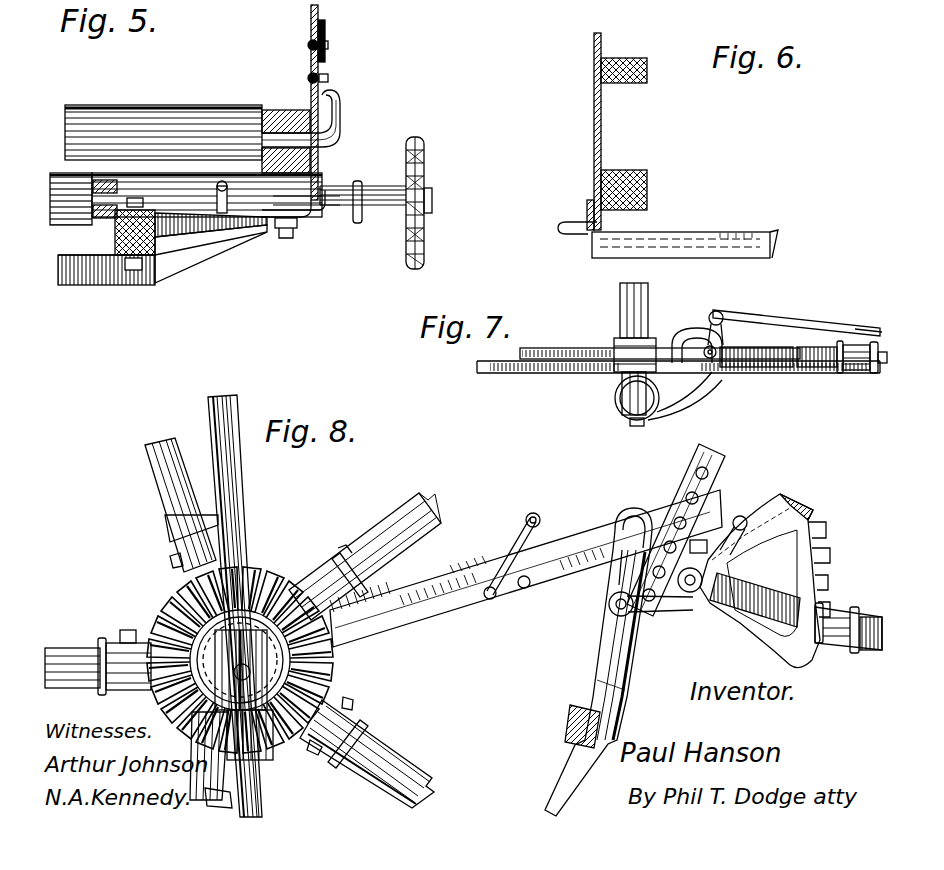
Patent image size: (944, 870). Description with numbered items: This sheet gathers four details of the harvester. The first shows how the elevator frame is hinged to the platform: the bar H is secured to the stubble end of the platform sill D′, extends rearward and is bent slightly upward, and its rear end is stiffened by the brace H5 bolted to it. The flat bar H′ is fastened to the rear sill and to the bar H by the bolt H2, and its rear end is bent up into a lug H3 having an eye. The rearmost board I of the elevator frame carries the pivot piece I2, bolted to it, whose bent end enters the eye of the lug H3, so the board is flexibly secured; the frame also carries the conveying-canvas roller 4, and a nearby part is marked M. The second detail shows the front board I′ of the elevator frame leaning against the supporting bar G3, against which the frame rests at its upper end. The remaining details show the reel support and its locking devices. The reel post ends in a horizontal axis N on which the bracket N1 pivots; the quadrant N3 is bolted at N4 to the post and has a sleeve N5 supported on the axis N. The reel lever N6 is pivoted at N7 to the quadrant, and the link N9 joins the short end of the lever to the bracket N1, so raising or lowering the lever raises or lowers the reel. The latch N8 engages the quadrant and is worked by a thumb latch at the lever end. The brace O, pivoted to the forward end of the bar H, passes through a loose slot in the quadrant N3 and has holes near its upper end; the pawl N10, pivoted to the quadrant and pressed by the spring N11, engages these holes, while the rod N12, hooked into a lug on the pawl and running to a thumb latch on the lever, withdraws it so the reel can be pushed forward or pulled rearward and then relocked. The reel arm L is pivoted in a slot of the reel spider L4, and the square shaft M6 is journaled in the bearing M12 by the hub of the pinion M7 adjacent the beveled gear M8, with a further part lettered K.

In FIG. 5, the roller 4 is at (163, 132).
In FIG. 5, the rearmost board of the elevator frame I is at (311, 33).
In FIG. 5, the pivot piece I2 is at (338, 108).
In FIG. 5, the lug H3 is at (328, 158).
In FIG. 5, the bar M is at (362, 0).
In FIG. 5, the flat bar H′ is at (225, 220).
In FIG. 5, the platform sill D′ is at (115, 232).
In FIG. 5, the brace H5 is at (205, 228).
In FIG. 5, the bar H is at (122, 285).
In FIG. 5, the bolt H2 is at (296, 238).
In FIG. 6, the front board of the elevator frame I′ is at (600, 140).
In FIG. 6, the supporting bar G3 is at (747, 238).
In FIG. 7, the brace O is at (557, 374).
In FIG. 8, the brace O is at (553, 800).
In FIG. 7, the reel lever N6 is at (802, 357).
In FIG. 8, the reel lever N6 is at (773, 597).
In FIG. 7, the horizontal axis N is at (630, 395).
In FIG. 8, the horizontal axis N is at (635, 516).
In FIG. 7, the bolt N4 is at (645, 424).
In FIG. 8, the bolt N4 is at (609, 604).
In FIG. 7, the arm K is at (712, 408).
In FIG. 8, the arm K is at (590, 680).
In FIG. 7, the sleeve N5 is at (670, 340).
In FIG. 8, the sleeve N5 is at (680, 512).
In FIG. 7, the pawl N10 is at (716, 311).
In FIG. 8, the pawl N10 is at (726, 535).
In FIG. 7, the spring N11 is at (752, 340).
In FIG. 7, the rod N12 is at (866, 320).
In FIG. 7, the quadrant N3 is at (767, 368).
In FIG. 8, the quadrant N3 is at (760, 527).
In FIG. 7, the latch N8 is at (858, 372).
In FIG. 8, the latch N8 is at (847, 617).
In FIG. 8, the shaft M6 is at (237, 468).
In FIG. 8, the beveled gear M8 is at (160, 605).
In FIG. 8, the bearing M12 is at (218, 655).
In FIG. 8, the reel arm L is at (380, 545).
In FIG. 8, the reel spider L4 is at (318, 578).
In FIG. 8, the pinion M7 is at (282, 768).
In FIG. 8, the bracket N1 is at (455, 610).
In FIG. 8, the link N9 is at (520, 548).
In FIG. 8, the pivot N7 is at (690, 592).